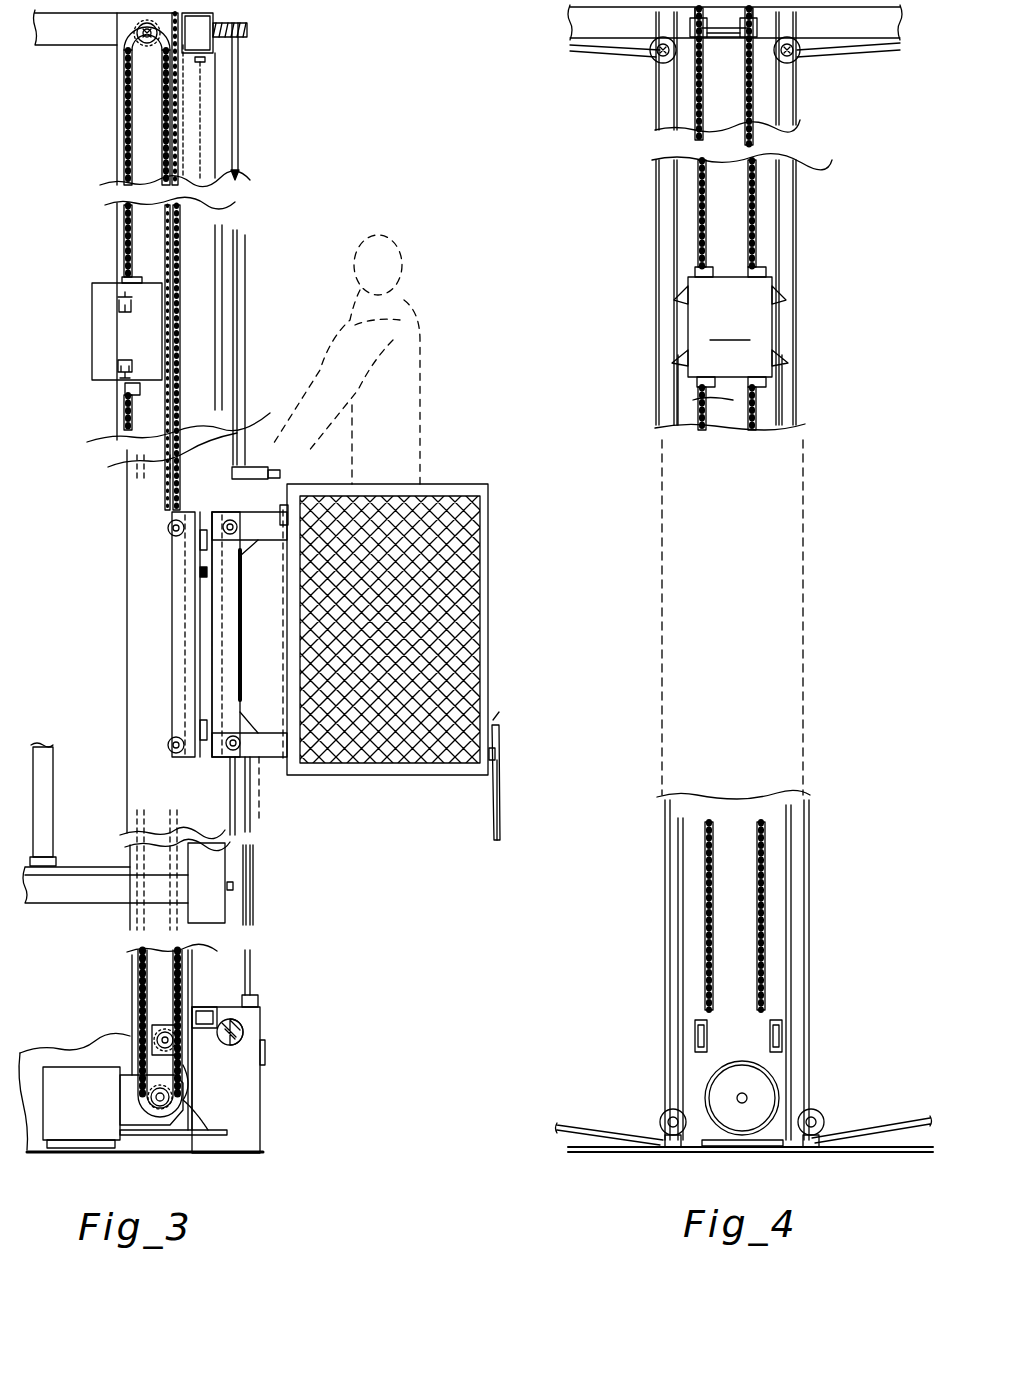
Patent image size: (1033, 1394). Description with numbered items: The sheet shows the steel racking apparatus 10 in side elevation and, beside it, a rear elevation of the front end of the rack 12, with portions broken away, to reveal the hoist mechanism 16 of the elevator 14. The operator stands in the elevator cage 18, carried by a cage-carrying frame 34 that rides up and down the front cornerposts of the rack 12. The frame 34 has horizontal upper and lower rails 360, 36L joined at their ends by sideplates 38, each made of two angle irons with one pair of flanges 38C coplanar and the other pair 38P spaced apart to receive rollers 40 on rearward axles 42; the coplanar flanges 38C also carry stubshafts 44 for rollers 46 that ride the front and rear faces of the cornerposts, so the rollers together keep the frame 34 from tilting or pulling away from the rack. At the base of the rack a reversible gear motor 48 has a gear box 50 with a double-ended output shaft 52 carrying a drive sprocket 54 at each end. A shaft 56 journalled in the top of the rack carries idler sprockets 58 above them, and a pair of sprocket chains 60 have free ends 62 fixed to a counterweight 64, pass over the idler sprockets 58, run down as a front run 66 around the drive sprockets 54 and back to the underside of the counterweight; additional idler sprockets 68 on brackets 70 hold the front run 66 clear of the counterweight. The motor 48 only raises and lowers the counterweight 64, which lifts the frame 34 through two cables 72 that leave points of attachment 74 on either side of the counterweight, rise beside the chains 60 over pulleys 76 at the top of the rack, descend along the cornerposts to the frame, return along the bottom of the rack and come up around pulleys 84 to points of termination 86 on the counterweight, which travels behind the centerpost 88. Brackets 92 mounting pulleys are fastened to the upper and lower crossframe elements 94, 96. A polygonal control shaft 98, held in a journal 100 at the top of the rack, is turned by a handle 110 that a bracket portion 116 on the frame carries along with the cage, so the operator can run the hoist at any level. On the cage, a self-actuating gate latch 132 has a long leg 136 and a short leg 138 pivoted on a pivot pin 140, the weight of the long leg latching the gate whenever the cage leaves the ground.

In FIG. 3, the steel racking apparatus 10 is at (281, 162).
In FIG. 4, the steel racking apparatus 10 is at (577, 123).
In FIG. 3, the rack 12 is at (55, 810).
In FIG. 4, the rack 12 is at (828, 47).
In FIG. 3, the elevator 14 is at (430, 474).
In FIG. 3, the hoist mechanism 16 is at (124, 1056).
In FIG. 4, the hoist mechanism 16 is at (688, 325).
In FIG. 3, the elevator cage 18 is at (466, 630).
In FIG. 3, the cage-carrying frame 34 is at (170, 616).
In FIG. 3, the lower rail 36L is at (262, 762).
In FIG. 3, the upper carriage bracket 360 is at (290, 516).
In FIG. 3, the sideplates 38 is at (181, 645).
In FIG. 3, the spaced parallel flanges 38P is at (212, 678).
In FIG. 3, the coplanar flanges 38C is at (176, 722).
In FIG. 3, the rollers 40 is at (203, 510).
In FIG. 3, the axles 42 is at (190, 530).
In FIG. 3, the stubshafts 44 is at (176, 512).
In FIG. 3, the rollers 46 is at (170, 526).
In FIG. 3, the reversible gear motor 48 is at (70, 1077).
In FIG. 4, the reversible gear motor 48 is at (768, 1098).
In FIG. 3, the gear box 50 is at (165, 1127).
In FIG. 3, the double-ended output shaft 52 is at (150, 1100).
In FIG. 3, the drive sprockets 54 is at (155, 1097).
In FIG. 3, the shaft 56 is at (140, 32).
In FIG. 4, the shaft 56 is at (736, 38).
In FIG. 3, the idler sprockets 58 is at (143, 53).
In FIG. 4, the idler sprockets 58 is at (760, 26).
In FIG. 3, the sprocket chains 60 is at (124, 105).
In FIG. 4, the sprocket chains 60 is at (705, 228).
In FIG. 3, the free ends 62 is at (127, 278).
In FIG. 4, the free ends 62 is at (697, 270).
In FIG. 3, the counterweight 64 is at (92, 326).
In FIG. 4, the counterweight 64 is at (730, 327).
In FIG. 3, the front run 66 is at (170, 300).
In FIG. 3, the additional idler sprockets 68 is at (165, 1026).
In FIG. 4, the additional idler sprockets 68 is at (748, 1035).
In FIG. 3, the brackets 70 is at (216, 1010).
In FIG. 4, the brackets 70 is at (697, 1030).
In FIG. 3, the cables 72 is at (227, 350).
In FIG. 4, the cables 72 is at (660, 95).
In FIG. 3, the points of attachment 74 is at (140, 308).
In FIG. 4, the points of attachment 74 is at (678, 298).
In FIG. 4, the pulleys 76 is at (651, 52).
In FIG. 4, the pulleys 84 is at (662, 1113).
In FIG. 4, the points of termination 86 is at (780, 358).
In FIG. 3, the centerpost 88 is at (183, 150).
In FIG. 4, the centerpost 88 is at (735, 405).
In FIG. 4, the brackets 92 is at (675, 1150).
In FIG. 3, the upper crossframe element 94 is at (215, 14).
In FIG. 4, the upper crossframe element 94 is at (582, 27).
In FIG. 4, the lower crossframe element 96 is at (872, 1143).
In FIG. 3, the shaft 98 is at (239, 102).
In FIG. 3, the journal 100 is at (247, 30).
In FIG. 3, the handle 110 is at (268, 468).
In FIG. 3, the bracket portion 116 is at (245, 465).
In FIG. 3, the self-actuating gate latch 132 is at (501, 782).
In FIG. 3, the long leg 136 is at (500, 822).
In FIG. 3, the short leg 138 is at (496, 722).
In FIG. 3, the pivot pin 140 is at (497, 752).